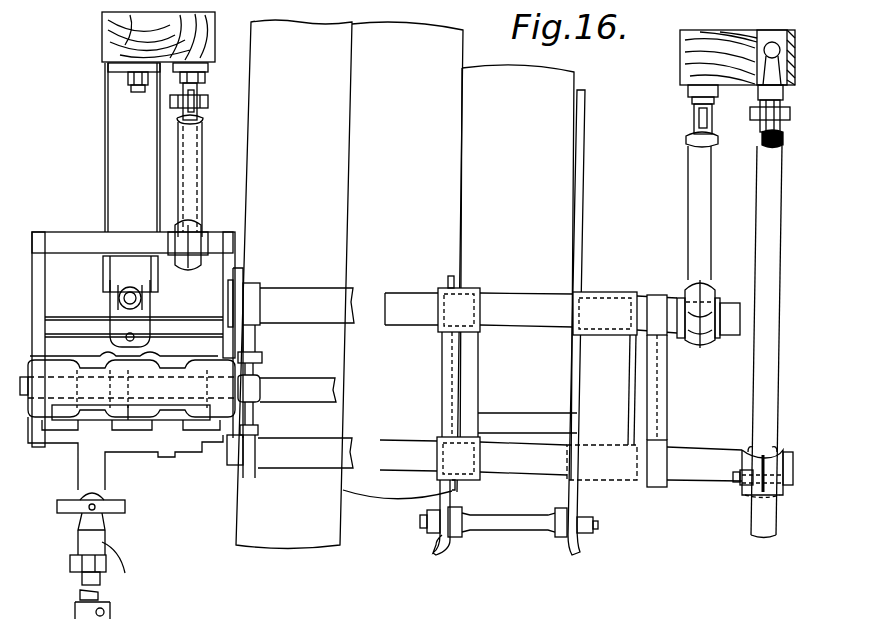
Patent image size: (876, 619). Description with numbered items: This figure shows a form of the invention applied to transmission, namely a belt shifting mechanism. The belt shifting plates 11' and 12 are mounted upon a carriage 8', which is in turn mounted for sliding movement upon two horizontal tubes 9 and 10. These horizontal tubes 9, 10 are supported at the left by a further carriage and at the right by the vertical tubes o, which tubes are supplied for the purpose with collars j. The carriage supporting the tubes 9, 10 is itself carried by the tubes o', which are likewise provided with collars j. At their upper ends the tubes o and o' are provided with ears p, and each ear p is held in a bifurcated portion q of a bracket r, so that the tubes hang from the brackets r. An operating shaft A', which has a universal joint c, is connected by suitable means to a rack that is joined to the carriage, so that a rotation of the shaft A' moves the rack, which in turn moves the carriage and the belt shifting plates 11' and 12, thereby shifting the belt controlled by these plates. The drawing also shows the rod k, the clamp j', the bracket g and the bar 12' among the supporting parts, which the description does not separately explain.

The bracket r is at (208, 70).
The ears p is at (198, 98).
The bifurcated portion q is at (204, 118).
The tubes o' is at (203, 179).
The tubes o is at (438, 342).
The collars j is at (454, 276).
The coupling clamp j' is at (469, 386).
The bracket g is at (132, 326).
The shaft k is at (288, 392).
The universal joint c is at (126, 506).
The operating shaft A' is at (106, 580).
The horizontal tube 10 is at (410, 318).
The horizontal tube 9 is at (395, 446).
The carriage 8' is at (552, 371).
The belt shifting plate 11' is at (422, 418).
The belt shifting plate 12 is at (523, 540).
The vertical bar 12' is at (599, 322).